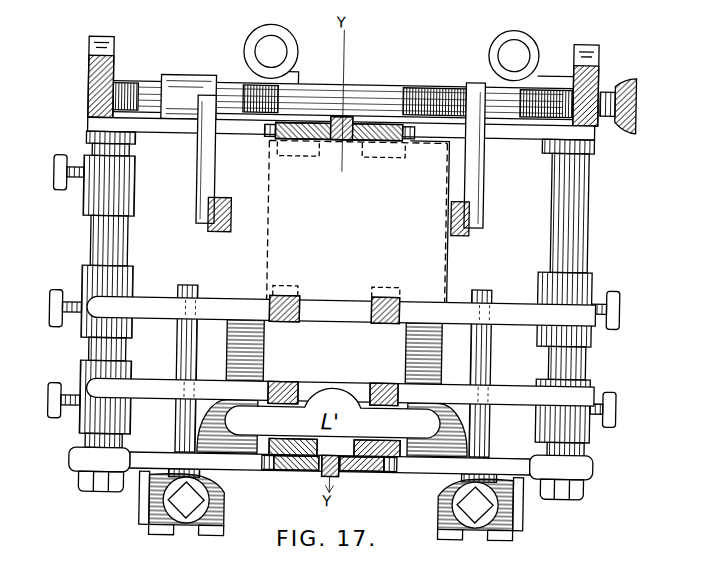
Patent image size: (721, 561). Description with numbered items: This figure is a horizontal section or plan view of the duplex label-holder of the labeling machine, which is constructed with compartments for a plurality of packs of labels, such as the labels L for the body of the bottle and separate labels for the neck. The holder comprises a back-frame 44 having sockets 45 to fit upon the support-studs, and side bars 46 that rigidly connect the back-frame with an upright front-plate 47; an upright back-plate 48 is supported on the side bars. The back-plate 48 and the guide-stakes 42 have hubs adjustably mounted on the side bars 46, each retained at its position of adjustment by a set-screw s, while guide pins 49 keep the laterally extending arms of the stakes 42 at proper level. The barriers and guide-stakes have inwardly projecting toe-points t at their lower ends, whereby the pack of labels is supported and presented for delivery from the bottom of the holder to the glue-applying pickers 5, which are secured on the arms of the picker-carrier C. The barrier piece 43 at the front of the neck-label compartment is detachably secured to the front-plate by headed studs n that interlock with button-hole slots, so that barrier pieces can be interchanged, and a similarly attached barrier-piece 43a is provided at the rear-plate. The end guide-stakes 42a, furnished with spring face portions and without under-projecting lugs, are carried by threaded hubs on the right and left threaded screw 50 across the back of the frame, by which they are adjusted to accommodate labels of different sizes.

The guide-stakes 42 is at (283, 323).
The end guide-stakes 42a is at (207, 222).
The barrier piece 43 is at (368, 461).
The barrier-piece 43a is at (365, 141).
The back-frame 44 is at (398, 86).
The sockets 45 is at (268, 33).
The side bars 46 is at (108, 247).
The front-plate 47 is at (595, 470).
The back-plate 48 is at (507, 132).
The guide pins 49 is at (190, 358).
The right and left threaded screw 50 is at (308, 98).
The glue-applying pickers 5 is at (334, 352).
The set-screw s is at (50, 178).
The toe-points t is at (339, 220).
The headed studs n is at (327, 471).
The labels L is at (358, 220).
The picker-carrier C is at (146, 507).